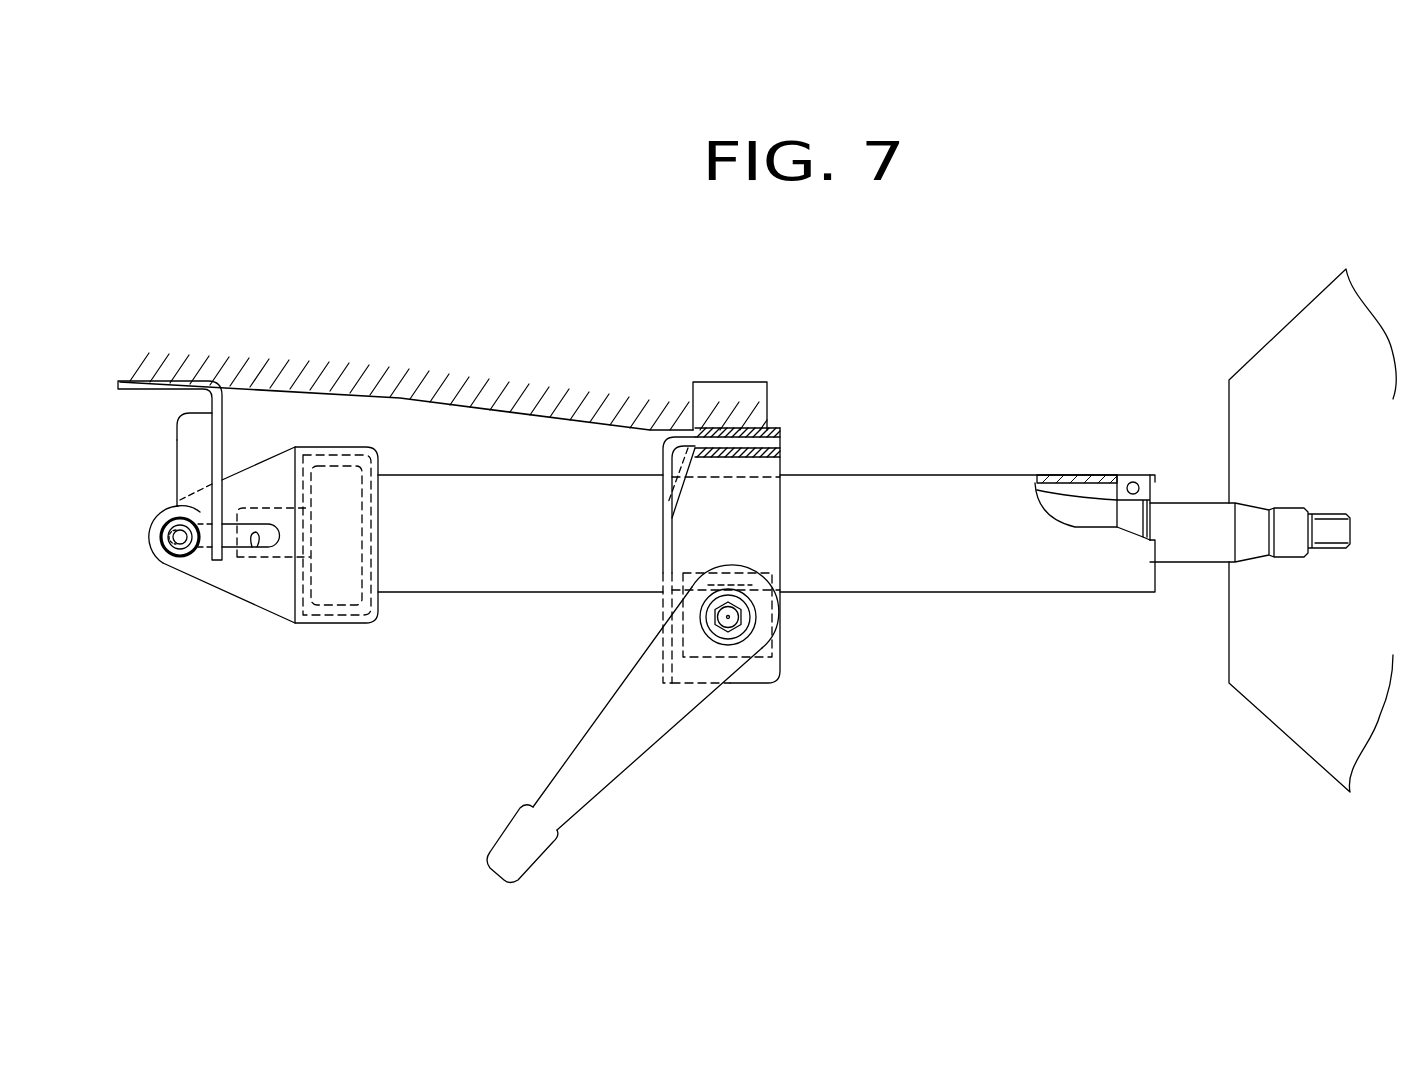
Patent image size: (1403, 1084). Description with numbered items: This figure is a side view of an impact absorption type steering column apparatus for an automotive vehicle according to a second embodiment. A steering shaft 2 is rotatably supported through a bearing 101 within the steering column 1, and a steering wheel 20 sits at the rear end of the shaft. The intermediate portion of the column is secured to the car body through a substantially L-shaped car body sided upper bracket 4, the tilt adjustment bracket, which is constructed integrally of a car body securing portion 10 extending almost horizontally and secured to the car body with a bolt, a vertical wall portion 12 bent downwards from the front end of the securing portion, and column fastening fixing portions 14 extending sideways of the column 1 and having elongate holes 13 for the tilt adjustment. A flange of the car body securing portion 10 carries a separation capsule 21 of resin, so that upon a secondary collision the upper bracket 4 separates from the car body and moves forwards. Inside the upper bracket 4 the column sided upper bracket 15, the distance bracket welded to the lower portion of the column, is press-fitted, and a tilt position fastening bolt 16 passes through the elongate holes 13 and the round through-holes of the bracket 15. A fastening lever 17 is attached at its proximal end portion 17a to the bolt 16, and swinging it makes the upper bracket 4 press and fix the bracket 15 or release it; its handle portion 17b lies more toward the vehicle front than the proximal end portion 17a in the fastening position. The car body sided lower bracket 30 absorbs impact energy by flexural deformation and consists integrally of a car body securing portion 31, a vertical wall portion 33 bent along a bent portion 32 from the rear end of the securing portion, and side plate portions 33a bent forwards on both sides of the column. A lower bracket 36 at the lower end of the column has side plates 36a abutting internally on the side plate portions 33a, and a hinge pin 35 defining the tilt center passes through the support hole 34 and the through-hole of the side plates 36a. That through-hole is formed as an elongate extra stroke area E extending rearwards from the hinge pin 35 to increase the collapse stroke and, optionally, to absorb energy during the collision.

The steering column 1 is at (1007, 475).
The steering shaft 2 is at (1203, 502).
The car body sided upper bracket 4 is at (832, 428).
The car body securing portion 10 is at (727, 447).
The vertical wall portion 12 is at (663, 601).
The elongate hole 13 is at (710, 641).
The column fastening fixing portion 14 is at (770, 511).
The column sided upper bracket 15 is at (763, 662).
The tilt position fastening bolt 16 is at (735, 617).
The fastening lever 17 is at (600, 712).
The proximal end portion 17a is at (753, 642).
The handle portion 17b is at (537, 843).
The steering wheel 20 is at (1255, 354).
The separation capsule 21 is at (772, 428).
The car body sided lower bracket 30 is at (246, 430).
The car body securing portion 31 is at (172, 381).
The bent portion 32 is at (237, 386).
The vertical wall portion 33 is at (185, 413).
The side plate portion 33a is at (186, 445).
The support hole 34 is at (175, 568).
The hinge pin 35 is at (183, 518).
The lower bracket 36 is at (331, 624).
The side plate 36a is at (227, 573).
The extra stroke area E is at (255, 549).
The bearing 101 is at (1137, 475).